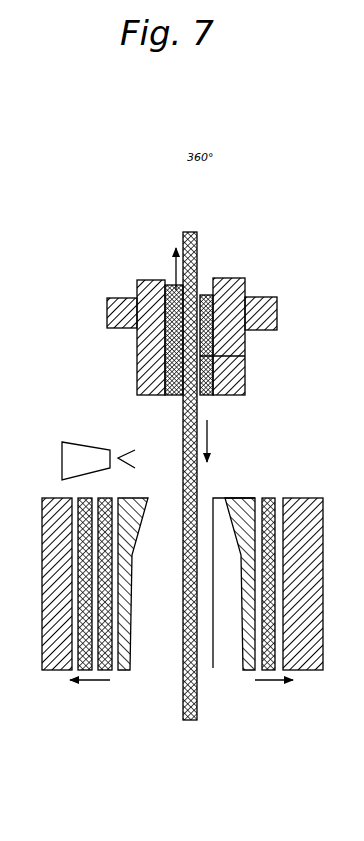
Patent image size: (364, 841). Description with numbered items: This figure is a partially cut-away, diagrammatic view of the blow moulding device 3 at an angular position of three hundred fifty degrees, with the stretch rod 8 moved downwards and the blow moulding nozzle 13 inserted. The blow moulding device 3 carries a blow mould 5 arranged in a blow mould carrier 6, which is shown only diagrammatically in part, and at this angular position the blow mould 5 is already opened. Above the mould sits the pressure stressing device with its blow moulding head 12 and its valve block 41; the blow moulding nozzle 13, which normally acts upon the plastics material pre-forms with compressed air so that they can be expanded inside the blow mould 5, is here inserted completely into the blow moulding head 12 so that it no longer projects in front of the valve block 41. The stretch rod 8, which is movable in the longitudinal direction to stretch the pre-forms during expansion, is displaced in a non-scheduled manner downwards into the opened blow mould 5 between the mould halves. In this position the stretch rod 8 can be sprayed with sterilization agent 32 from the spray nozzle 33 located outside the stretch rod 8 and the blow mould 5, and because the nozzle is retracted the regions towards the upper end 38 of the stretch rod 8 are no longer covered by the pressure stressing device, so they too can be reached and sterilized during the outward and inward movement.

The blow moulding device 3 is at (315, 212).
The blow mould 5 is at (125, 660).
The blow mould carrier 6 is at (324, 587).
The stretch rod 8 is at (199, 243).
The blow moulding head 12 is at (137, 272).
The blow moulding nozzle 13 is at (245, 356).
The sterilization agent 32 is at (123, 455).
The spray nozzle 33 is at (68, 442).
The upper end 38 is at (205, 234).
The valve block 41 is at (246, 285).